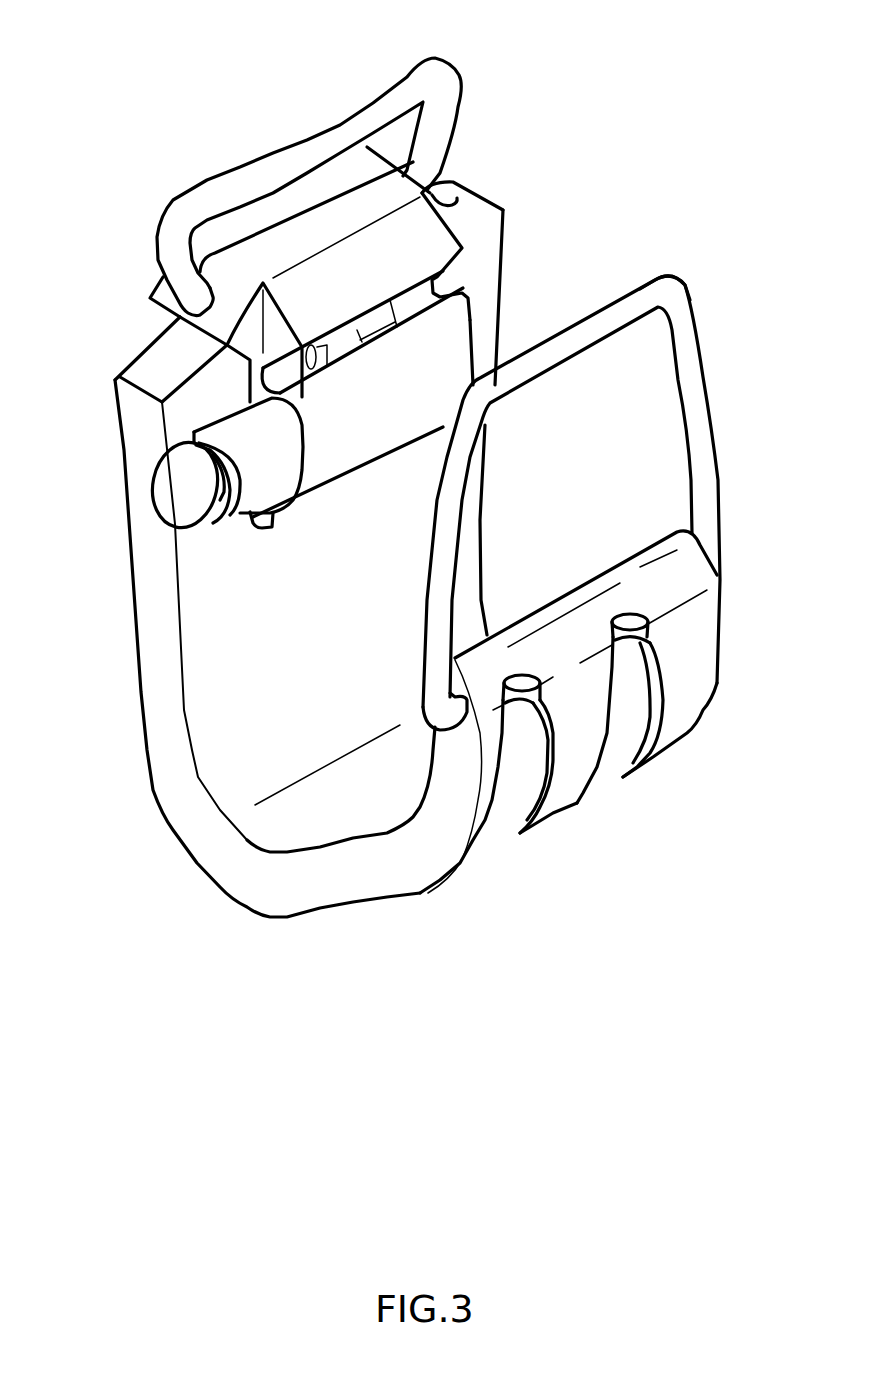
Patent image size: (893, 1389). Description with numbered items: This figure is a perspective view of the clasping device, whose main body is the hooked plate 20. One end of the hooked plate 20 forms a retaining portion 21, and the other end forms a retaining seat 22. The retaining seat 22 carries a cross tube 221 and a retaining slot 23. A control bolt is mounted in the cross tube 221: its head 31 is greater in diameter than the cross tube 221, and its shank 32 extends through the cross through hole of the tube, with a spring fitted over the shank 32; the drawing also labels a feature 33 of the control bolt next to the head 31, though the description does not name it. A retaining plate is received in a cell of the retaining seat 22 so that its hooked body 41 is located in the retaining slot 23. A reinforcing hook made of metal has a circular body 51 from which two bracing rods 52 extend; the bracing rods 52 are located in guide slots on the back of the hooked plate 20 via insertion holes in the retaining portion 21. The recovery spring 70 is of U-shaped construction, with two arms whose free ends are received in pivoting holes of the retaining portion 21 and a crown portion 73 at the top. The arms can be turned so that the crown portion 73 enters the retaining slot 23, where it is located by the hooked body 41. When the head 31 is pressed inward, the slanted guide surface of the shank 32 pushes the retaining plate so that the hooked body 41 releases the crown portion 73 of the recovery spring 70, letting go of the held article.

The hooked plate 20 is at (152, 667).
The retaining portion 21 is at (703, 697).
The retaining seat 22 is at (367, 443).
The cross tube 221 is at (270, 480).
The retaining slot 23 is at (450, 282).
The head 31 is at (175, 500).
The shank 32 is at (228, 485).
The head rim 33 is at (148, 478).
The hooked body 41 is at (357, 325).
The circular body 51 is at (430, 80).
The bracing rods 52 is at (617, 772).
The recovery spring 70 is at (708, 391).
The crown portion 73 is at (659, 288).